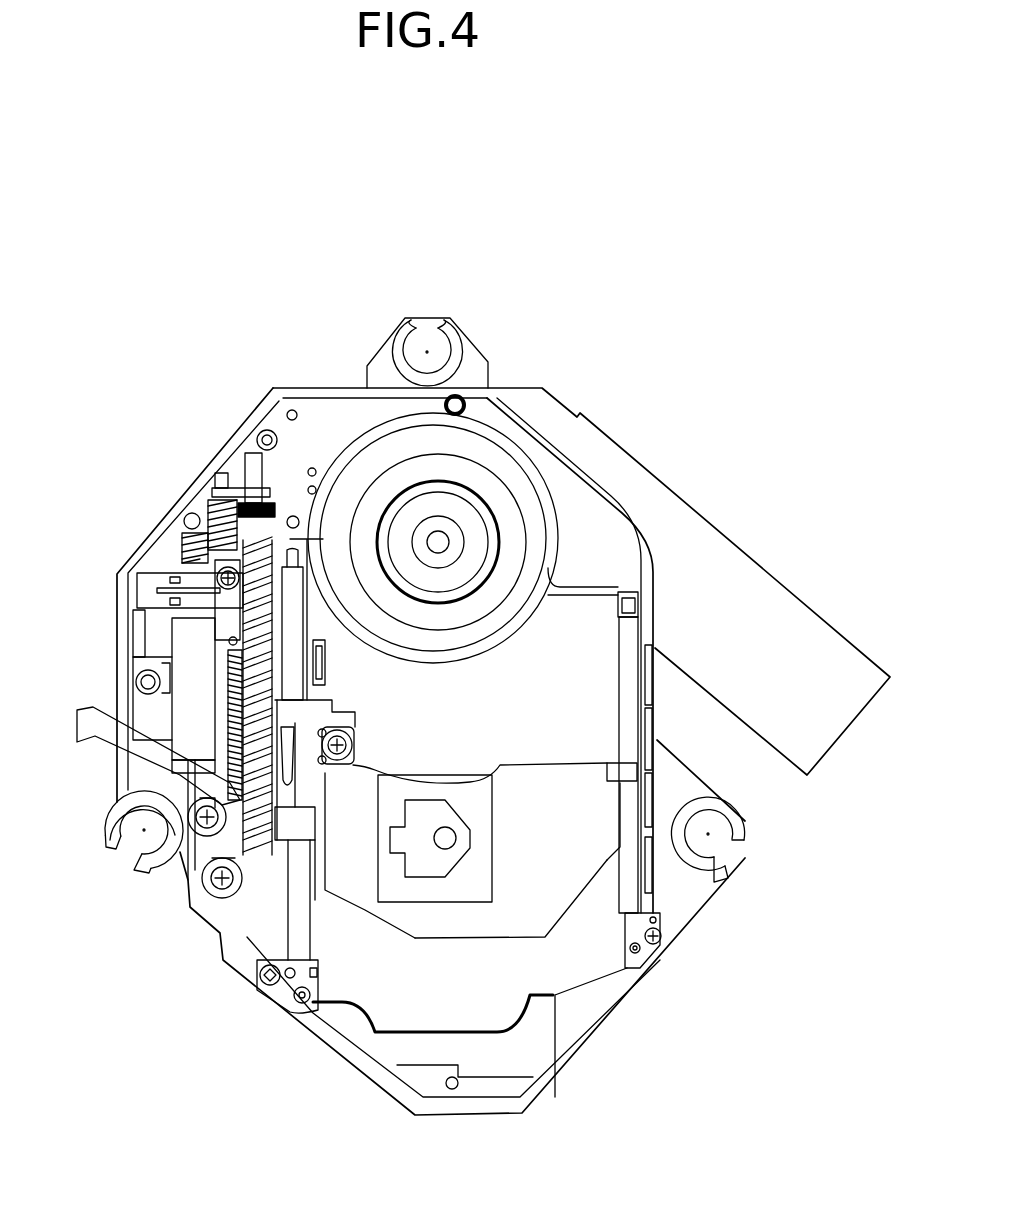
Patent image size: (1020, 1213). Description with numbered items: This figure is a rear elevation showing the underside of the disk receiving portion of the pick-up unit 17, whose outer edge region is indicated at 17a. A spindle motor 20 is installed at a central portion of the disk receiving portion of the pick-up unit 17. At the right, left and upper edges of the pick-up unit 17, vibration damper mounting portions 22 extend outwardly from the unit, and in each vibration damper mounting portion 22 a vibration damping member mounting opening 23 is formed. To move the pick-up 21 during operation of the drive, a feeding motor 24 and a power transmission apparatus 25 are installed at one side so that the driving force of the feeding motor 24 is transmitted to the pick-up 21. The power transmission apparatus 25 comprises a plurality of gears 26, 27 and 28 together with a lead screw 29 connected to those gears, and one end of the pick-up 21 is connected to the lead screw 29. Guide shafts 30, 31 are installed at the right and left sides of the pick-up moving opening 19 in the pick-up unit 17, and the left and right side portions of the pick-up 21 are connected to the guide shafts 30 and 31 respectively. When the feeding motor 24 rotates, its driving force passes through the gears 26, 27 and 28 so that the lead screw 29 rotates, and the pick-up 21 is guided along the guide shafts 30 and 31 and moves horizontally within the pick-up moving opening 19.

The pick-up unit 17 is at (632, 993).
The chassis rim 17a is at (563, 973).
The pick-up moving opening 19 is at (423, 920).
The spindle motor 20 is at (444, 540).
The pick-up 21 is at (465, 875).
The vibration damper mounting portion 22 is at (470, 347).
The vibration damping member mounting opening 23 is at (425, 350).
The feeding motor 24 is at (193, 640).
The power transmission apparatus 25 is at (175, 505).
The gear 26 is at (172, 537).
The gear 27 is at (213, 497).
The gear 28 is at (257, 498).
The lead screw 29 is at (245, 855).
The guide shaft 30 is at (300, 933).
The guide shaft 31 is at (630, 790).